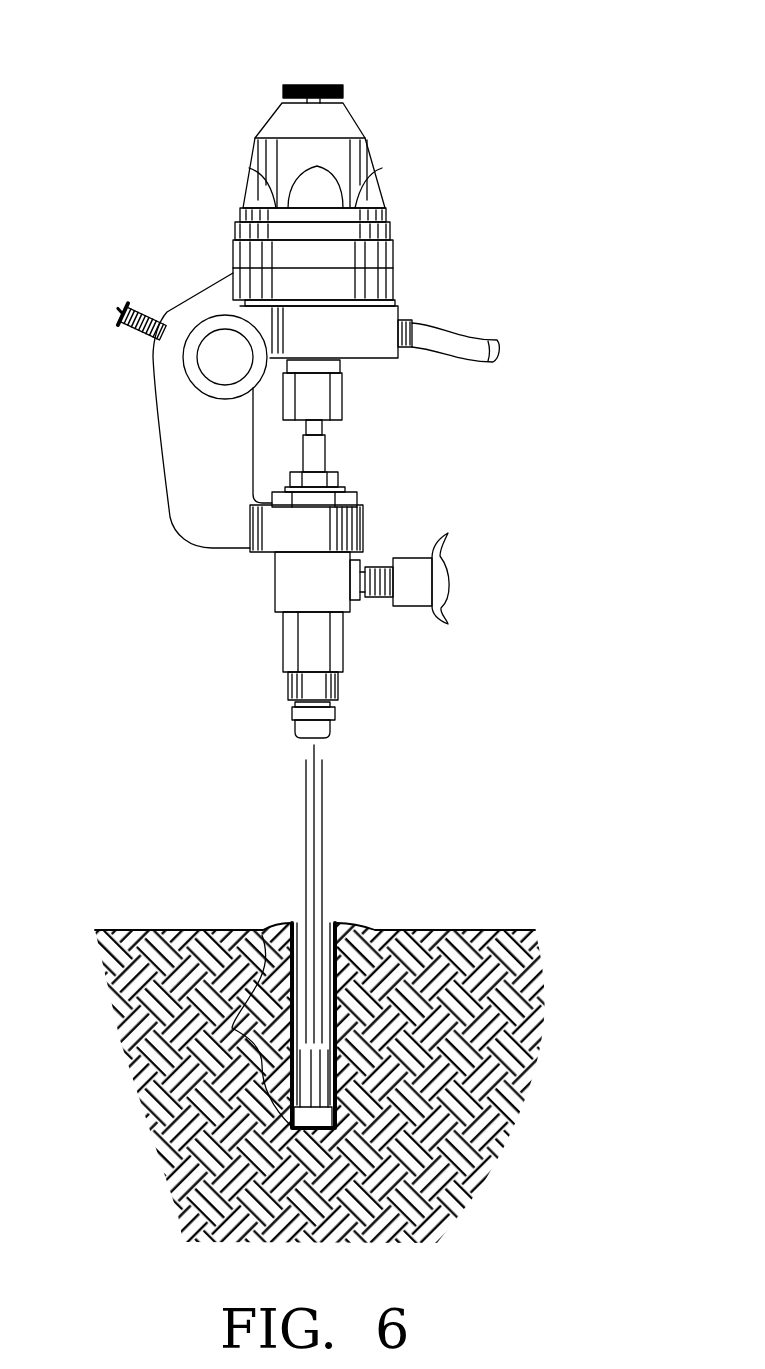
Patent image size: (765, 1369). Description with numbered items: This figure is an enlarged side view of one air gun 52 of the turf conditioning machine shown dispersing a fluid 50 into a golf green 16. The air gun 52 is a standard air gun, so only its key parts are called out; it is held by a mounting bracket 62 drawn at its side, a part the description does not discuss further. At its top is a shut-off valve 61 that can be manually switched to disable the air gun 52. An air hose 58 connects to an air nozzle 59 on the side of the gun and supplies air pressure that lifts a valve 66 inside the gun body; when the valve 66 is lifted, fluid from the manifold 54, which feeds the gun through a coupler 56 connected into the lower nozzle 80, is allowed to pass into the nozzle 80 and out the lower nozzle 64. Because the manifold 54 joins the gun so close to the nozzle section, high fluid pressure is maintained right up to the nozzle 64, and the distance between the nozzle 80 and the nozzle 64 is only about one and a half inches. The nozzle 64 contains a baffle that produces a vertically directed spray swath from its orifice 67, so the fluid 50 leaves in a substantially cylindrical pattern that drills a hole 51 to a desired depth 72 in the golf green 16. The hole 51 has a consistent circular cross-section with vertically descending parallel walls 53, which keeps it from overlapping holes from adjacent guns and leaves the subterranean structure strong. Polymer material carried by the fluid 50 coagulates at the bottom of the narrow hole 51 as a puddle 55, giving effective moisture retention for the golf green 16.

The golf green 16 is at (135, 930).
The fluid 50 is at (307, 798).
The hole 51 is at (336, 917).
The air gun 52 is at (548, 162).
The walls 53 is at (290, 950).
The manifold 54 is at (450, 574).
The puddle 55 is at (332, 1115).
The coupler 56 is at (413, 606).
The air hose 58 is at (473, 343).
The air nozzle 59 is at (412, 327).
The top shut-off valve 61 is at (298, 85).
The bracket 62 is at (180, 438).
The nozzle 64 is at (334, 712).
The valve 66 is at (323, 458).
The orifice 67 is at (326, 748).
The depth 72 is at (232, 1028).
The nozzle 80 is at (377, 568).